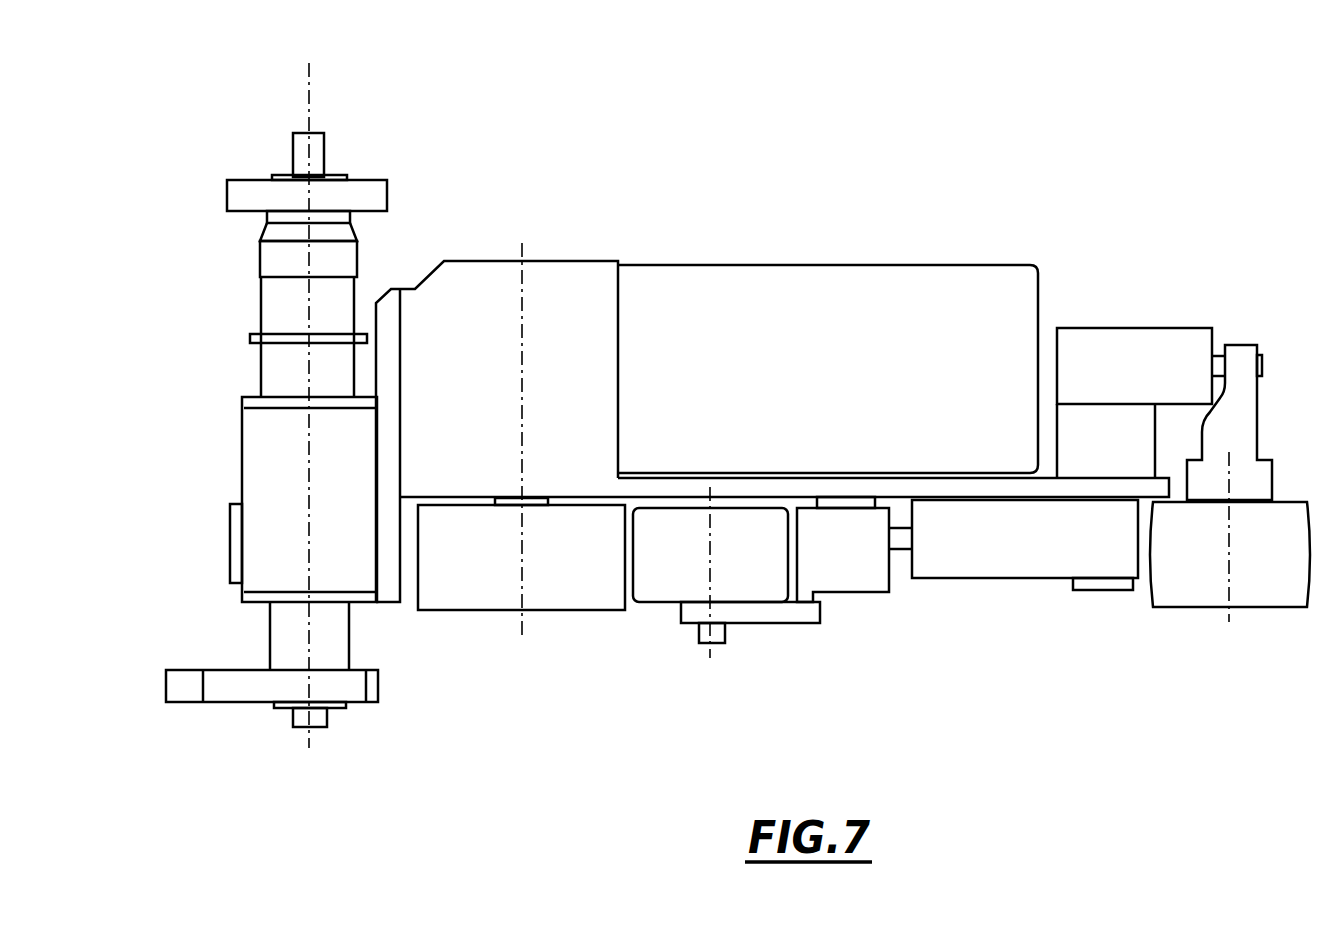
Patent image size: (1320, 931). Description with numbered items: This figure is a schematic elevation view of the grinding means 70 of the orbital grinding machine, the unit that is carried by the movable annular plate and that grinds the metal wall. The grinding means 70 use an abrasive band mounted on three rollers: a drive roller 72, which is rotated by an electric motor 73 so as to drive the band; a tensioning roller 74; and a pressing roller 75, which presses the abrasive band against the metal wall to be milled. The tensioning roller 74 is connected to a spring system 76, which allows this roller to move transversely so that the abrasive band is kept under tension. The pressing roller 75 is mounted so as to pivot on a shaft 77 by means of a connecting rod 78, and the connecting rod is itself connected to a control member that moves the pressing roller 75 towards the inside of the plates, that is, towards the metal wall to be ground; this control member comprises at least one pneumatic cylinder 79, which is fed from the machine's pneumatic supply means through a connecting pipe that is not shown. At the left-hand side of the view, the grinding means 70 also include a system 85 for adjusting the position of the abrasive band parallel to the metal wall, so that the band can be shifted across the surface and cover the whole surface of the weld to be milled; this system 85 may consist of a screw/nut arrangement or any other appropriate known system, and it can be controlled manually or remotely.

The grinding means 70 is at (686, 180).
The drive roller 72 is at (463, 606).
The electric motor 73 is at (767, 282).
The tensioning roller 74 is at (1277, 592).
The pressing roller 75 is at (660, 595).
The spring system 76 is at (1125, 343).
The shaft 77 is at (850, 575).
The connecting rod 78 is at (767, 613).
The pneumatic cylinder 79 is at (1005, 563).
The adjusting system 85 is at (200, 366).